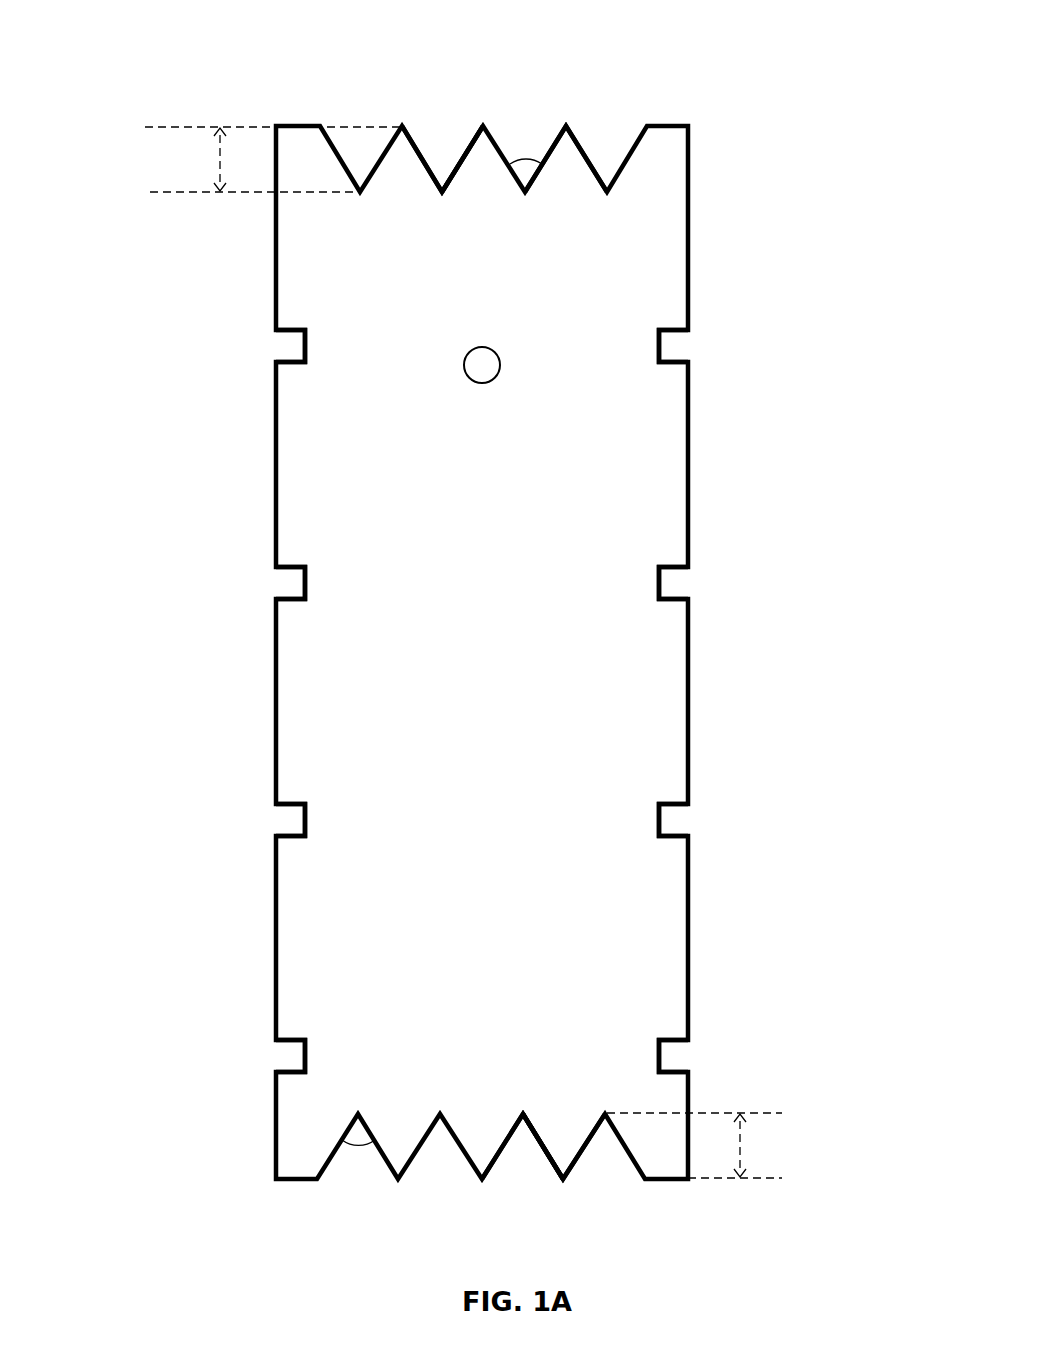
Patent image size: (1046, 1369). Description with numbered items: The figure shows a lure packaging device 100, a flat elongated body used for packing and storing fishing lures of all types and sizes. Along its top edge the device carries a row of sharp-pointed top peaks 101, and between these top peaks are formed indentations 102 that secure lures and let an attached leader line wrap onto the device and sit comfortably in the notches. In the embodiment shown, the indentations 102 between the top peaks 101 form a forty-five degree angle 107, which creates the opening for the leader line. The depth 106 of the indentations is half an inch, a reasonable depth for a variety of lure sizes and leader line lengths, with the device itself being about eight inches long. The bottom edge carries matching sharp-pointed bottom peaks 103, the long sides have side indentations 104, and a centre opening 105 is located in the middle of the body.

The lure packaging device 100 is at (811, 108).
The top peak 101 is at (566, 127).
The indentations 102 is at (450, 162).
The bottom peak 103 is at (442, 192).
The side indentations 104 is at (299, 351).
The centre opening 105 is at (512, 353).
The depth of the indentations 106 is at (170, 157).
The forty-five degree angle 107 is at (520, 125).